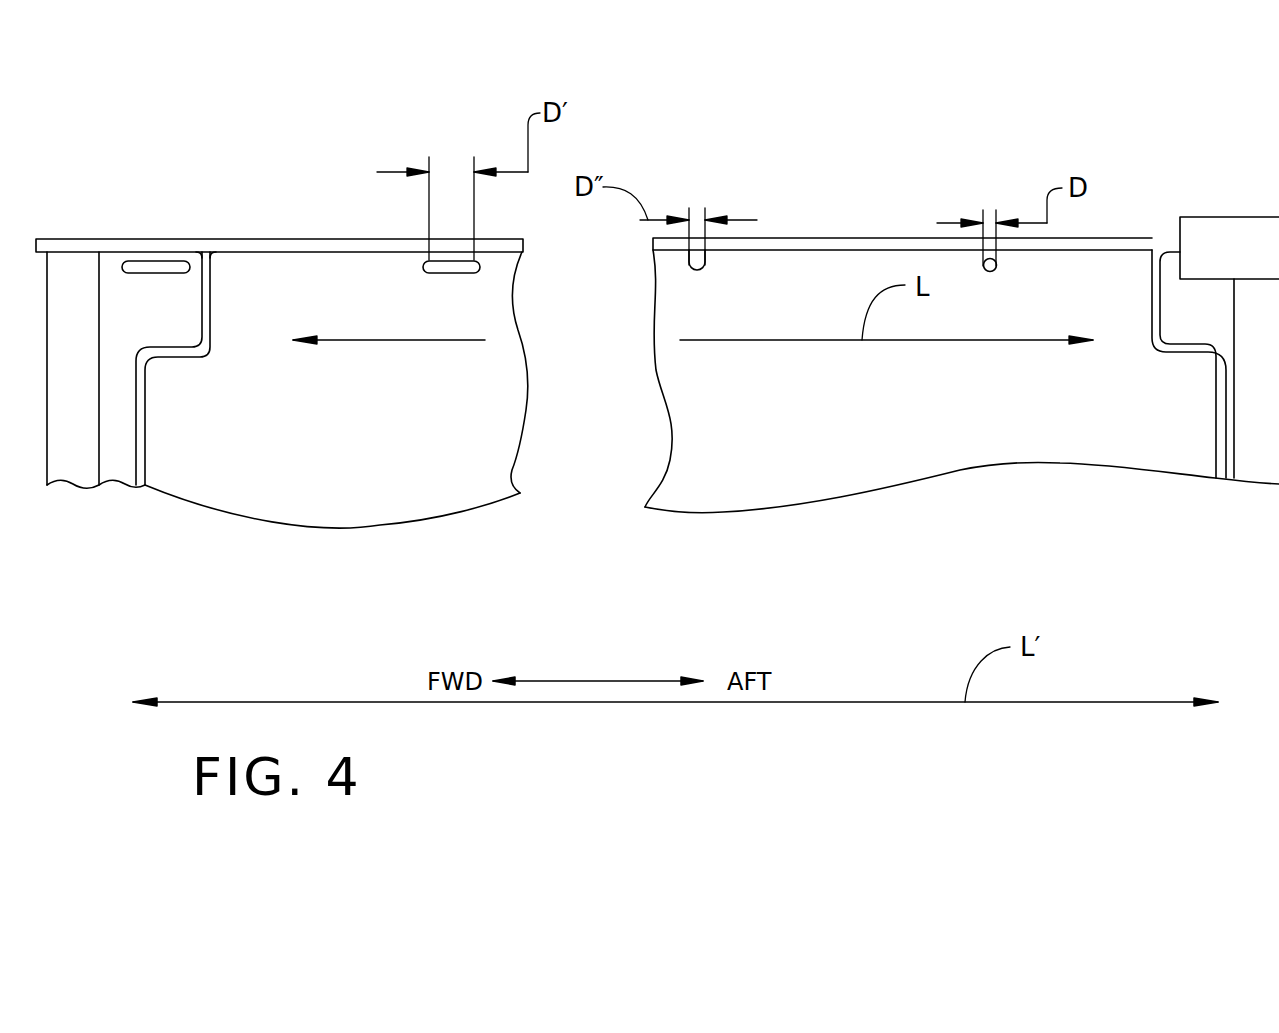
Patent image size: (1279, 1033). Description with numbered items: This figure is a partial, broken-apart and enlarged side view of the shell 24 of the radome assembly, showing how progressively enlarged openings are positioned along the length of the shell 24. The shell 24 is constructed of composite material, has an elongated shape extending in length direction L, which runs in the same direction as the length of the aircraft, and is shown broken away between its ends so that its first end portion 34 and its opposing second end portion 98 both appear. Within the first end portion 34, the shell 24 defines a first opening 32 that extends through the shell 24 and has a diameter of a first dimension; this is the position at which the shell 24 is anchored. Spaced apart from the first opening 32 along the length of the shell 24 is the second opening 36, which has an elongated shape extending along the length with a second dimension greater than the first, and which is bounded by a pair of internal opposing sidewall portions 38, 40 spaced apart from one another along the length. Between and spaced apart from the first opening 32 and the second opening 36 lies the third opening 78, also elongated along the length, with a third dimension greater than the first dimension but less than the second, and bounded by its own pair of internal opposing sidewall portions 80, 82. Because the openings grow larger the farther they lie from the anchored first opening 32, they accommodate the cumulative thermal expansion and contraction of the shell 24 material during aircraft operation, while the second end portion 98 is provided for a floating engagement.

The shell 24 is at (988, 418).
The first opening 32 is at (1000, 273).
The first end portion 34 is at (1104, 318).
The second opening 36 is at (452, 260).
The internal opposing sidewall portion 38 is at (423, 266).
The internal opposing sidewall portion 40 is at (480, 265).
The third opening 78 is at (712, 266).
The internal opposing sidewall portion 80 is at (696, 272).
The internal opposing sidewall portion 82 is at (701, 272).
The second end portion 98 is at (185, 436).